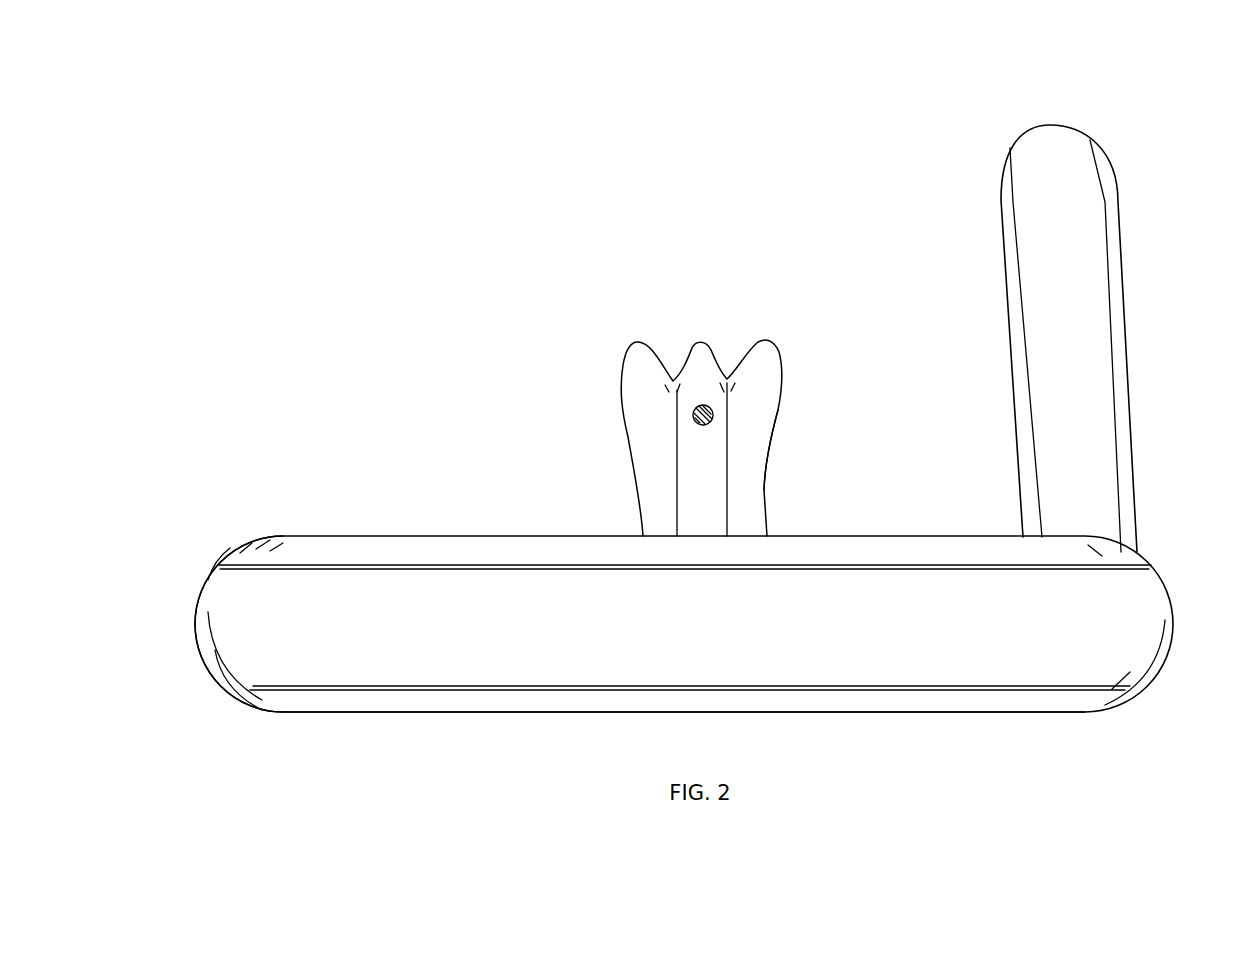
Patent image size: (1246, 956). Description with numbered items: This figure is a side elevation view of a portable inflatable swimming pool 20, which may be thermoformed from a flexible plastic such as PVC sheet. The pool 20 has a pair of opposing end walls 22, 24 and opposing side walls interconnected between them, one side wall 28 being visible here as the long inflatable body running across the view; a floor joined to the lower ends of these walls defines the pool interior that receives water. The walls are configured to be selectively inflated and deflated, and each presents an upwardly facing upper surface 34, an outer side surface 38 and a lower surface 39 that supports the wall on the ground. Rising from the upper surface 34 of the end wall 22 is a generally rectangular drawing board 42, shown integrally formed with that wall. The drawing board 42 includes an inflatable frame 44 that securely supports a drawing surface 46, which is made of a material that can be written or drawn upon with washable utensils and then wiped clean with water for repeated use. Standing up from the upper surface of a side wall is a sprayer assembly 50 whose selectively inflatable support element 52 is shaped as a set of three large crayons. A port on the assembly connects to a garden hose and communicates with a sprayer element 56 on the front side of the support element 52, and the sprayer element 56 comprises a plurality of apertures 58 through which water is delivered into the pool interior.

The portable inflatable swimming pool 20 is at (313, 132).
The end wall 22 is at (1165, 587).
The end wall 24 is at (195, 600).
The side wall 28 is at (930, 658).
The upper surface 34 is at (927, 543).
The outer side surface 38 is at (243, 660).
The lower surface 39 is at (508, 713).
The drawing board 42 is at (992, 185).
The frame 44 is at (1063, 172).
The drawing surface 46 is at (1012, 350).
The sprayer assembly 50 is at (702, 327).
The support element 52 is at (763, 450).
The sprayer element 56 is at (710, 412).
The apertures 58 is at (695, 420).